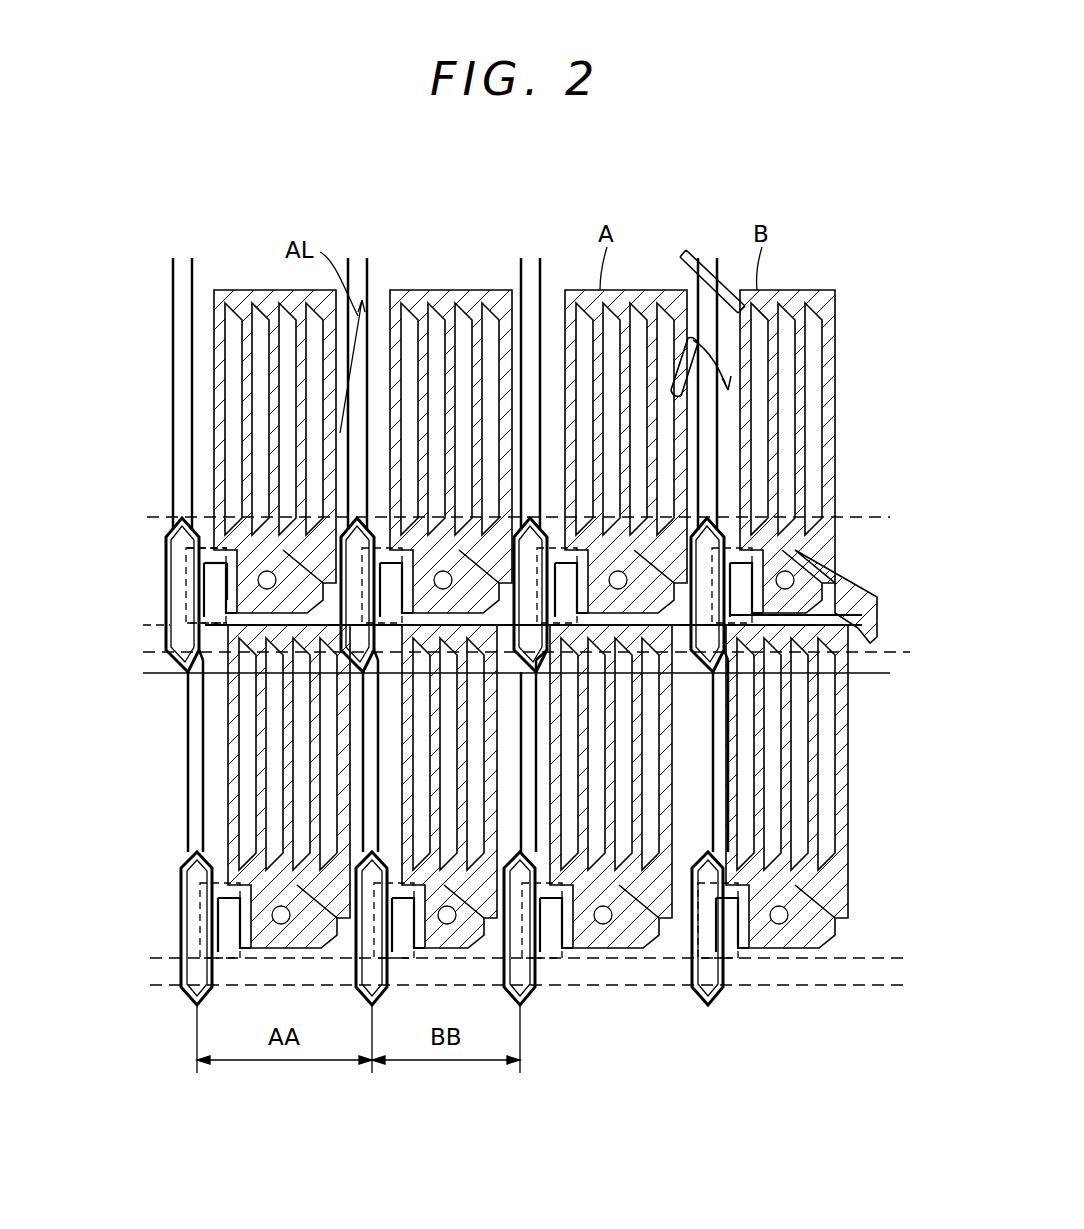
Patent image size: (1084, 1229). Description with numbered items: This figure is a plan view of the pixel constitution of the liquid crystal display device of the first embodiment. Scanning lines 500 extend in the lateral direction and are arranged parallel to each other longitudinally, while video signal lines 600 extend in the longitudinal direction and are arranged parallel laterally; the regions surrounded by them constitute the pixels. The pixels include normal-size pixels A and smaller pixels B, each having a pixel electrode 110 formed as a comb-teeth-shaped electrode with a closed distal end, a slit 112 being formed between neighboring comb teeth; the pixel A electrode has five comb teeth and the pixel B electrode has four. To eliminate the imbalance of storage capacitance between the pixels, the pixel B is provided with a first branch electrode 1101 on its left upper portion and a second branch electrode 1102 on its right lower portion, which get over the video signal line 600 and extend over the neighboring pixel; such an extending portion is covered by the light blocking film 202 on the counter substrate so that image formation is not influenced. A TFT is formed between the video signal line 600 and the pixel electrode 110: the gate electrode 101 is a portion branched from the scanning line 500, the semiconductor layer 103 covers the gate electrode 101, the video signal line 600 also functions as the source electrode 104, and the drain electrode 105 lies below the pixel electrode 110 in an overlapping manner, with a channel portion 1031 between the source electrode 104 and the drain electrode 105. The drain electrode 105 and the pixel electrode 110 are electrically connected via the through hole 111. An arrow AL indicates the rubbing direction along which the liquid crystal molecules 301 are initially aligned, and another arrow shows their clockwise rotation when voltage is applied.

The video signal line 600 is at (172, 300).
The light blocking film 202 is at (167, 517).
The channel portion 1031 is at (205, 572).
The semiconductor layer 103 is at (165, 567).
The gate electrode 101 is at (188, 587).
The source electrode 104 is at (195, 593).
The drain electrode 105 is at (187, 620).
The scanning line 500 is at (160, 647).
The first branch electrode 1101 is at (692, 252).
The liquid crystal molecules 301 is at (690, 340).
The pixel electrode 110 is at (820, 290).
The slit 112 is at (818, 372).
The through hole 111 is at (833, 583).
The second branch electrode 1102 is at (858, 580).